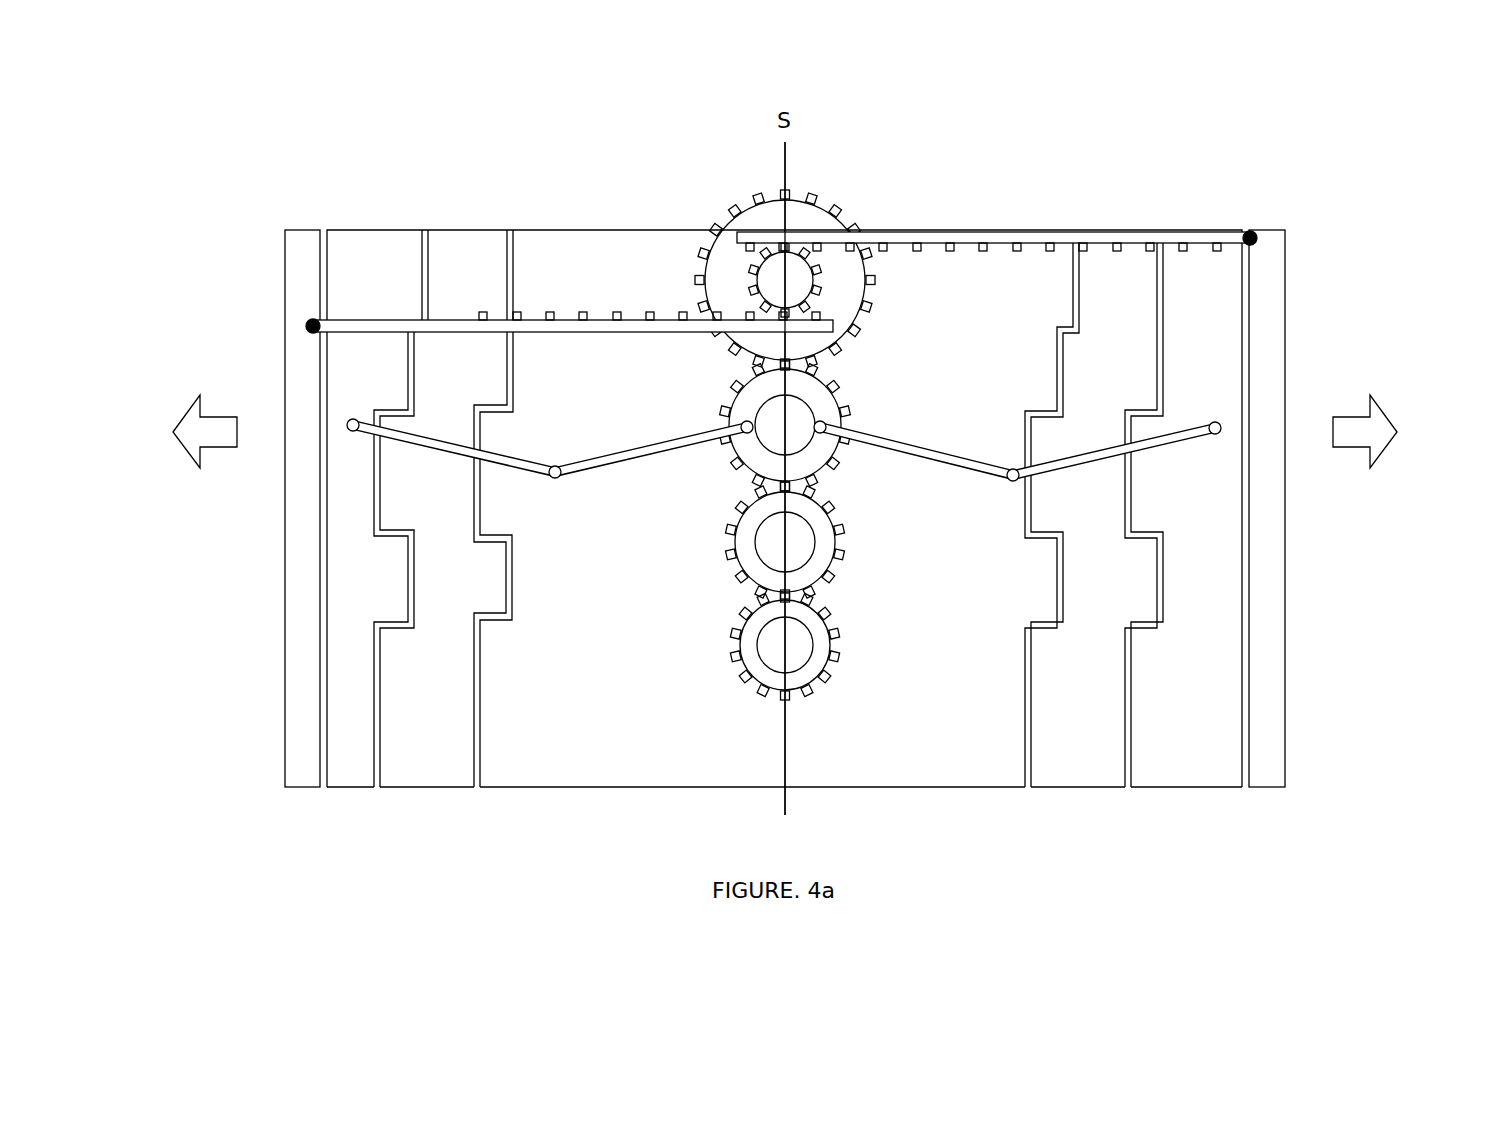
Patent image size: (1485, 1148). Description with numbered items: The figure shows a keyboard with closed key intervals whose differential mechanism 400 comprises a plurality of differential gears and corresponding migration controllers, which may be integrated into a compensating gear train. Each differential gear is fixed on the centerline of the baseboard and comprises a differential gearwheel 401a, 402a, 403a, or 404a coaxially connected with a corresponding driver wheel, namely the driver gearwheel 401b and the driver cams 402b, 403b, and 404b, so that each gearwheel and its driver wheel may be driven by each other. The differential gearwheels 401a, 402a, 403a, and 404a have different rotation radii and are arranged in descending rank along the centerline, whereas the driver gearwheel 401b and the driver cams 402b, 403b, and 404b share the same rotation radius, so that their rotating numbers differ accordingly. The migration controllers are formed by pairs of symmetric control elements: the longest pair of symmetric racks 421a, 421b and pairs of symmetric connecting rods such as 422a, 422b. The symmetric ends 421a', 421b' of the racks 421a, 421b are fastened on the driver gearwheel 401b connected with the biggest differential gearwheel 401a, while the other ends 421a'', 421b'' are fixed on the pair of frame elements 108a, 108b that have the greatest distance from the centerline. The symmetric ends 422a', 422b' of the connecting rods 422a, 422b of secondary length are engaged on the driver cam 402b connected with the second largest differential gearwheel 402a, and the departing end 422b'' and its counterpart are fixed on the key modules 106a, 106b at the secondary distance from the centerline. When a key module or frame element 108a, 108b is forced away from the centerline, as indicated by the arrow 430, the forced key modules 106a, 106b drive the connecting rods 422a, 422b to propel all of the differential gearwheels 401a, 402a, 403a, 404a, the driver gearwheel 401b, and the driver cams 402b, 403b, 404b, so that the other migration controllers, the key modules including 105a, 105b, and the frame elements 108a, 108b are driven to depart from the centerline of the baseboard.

The differential mechanism 400 is at (814, 156).
The differential gearwheel 401a is at (838, 215).
The driver gearwheel 401b is at (770, 288).
The differential gearwheel 402a is at (828, 392).
The driver cam 402b is at (770, 420).
The differential gearwheel 403a is at (838, 562).
The driver cam 403b is at (760, 555).
The differential gearwheel 404a is at (830, 662).
The driver cam 404b is at (760, 656).
The rack 421a is at (993, 223).
The symmetric end of rack 421a' is at (688, 192).
The symmetric end of rack 421a'' is at (1301, 220).
The rack 421b is at (573, 251).
The symmetric end of rack 421b' is at (891, 323).
The symmetric end of rack 421b'' is at (255, 306).
The connecting rod 422a is at (1017, 441).
The symmetric end of connecting rod 422a' is at (1031, 432).
The connecting rod 422b is at (550, 439).
The symmetric end of connecting rod 422b' is at (699, 463).
The symmetric end of connecting rod 422b'' is at (279, 395).
The arrow 430 is at (190, 418).
The key module 105a is at (1090, 772).
The key module 105b is at (437, 772).
The key module 106a is at (1188, 772).
The key module 106b is at (347, 772).
The frame element 108a is at (1280, 658).
The frame element 108b is at (287, 658).